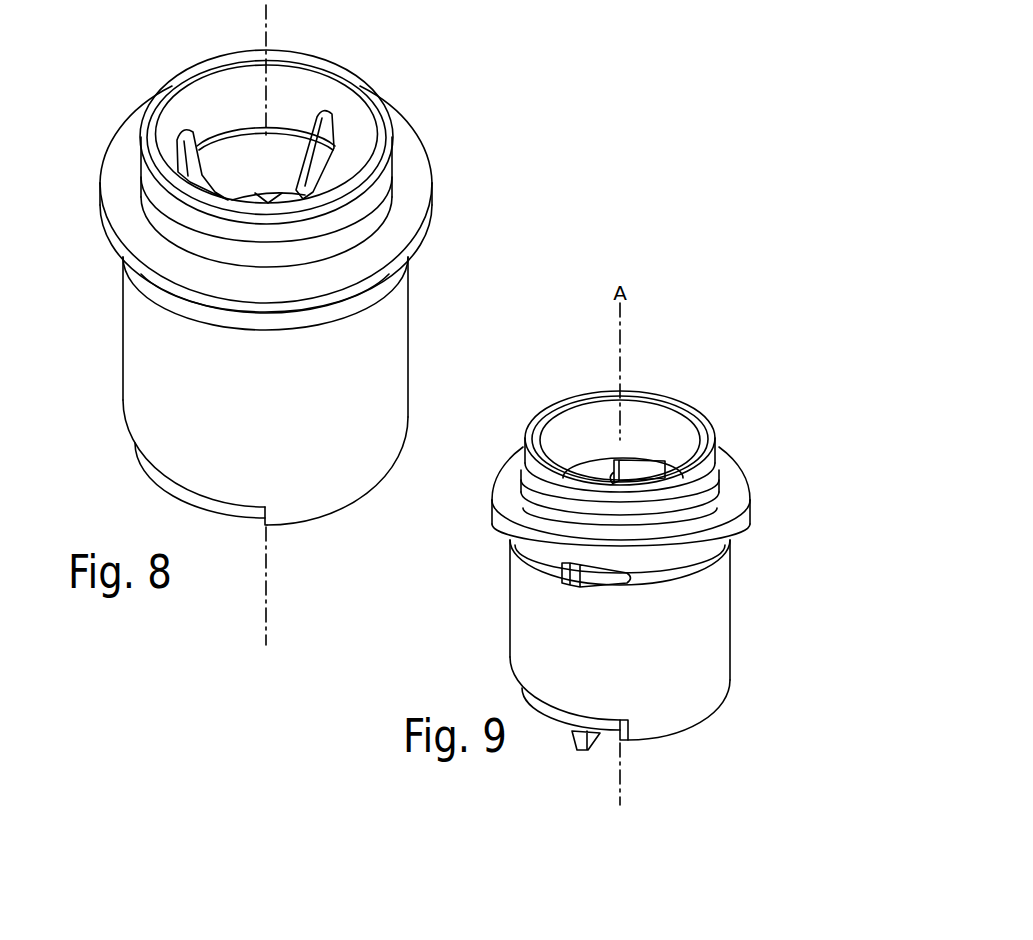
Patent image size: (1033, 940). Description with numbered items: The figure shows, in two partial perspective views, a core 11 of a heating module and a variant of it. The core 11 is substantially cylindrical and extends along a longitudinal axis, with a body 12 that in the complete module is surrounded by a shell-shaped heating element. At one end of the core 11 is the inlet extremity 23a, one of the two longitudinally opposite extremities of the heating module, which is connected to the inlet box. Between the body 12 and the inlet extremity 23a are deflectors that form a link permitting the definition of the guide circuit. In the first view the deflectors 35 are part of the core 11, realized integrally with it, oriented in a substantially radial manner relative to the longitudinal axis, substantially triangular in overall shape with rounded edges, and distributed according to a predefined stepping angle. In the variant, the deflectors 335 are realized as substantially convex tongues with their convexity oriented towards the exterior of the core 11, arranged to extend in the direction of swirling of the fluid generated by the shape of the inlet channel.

In FIG. 8, the core 11 is at (315, 267).
In FIG. 9, the core 11 is at (648, 555).
In FIG. 8, the body 12 is at (395, 363).
In FIG. 9, the body 12 is at (713, 623).
In FIG. 8, the inlet extremity 23a is at (440, 119).
In FIG. 9, the inlet extremity 23a is at (710, 404).
In FIG. 8, the deflectors 35 is at (203, 138).
In FIG. 9, the deflectors 335 is at (637, 467).